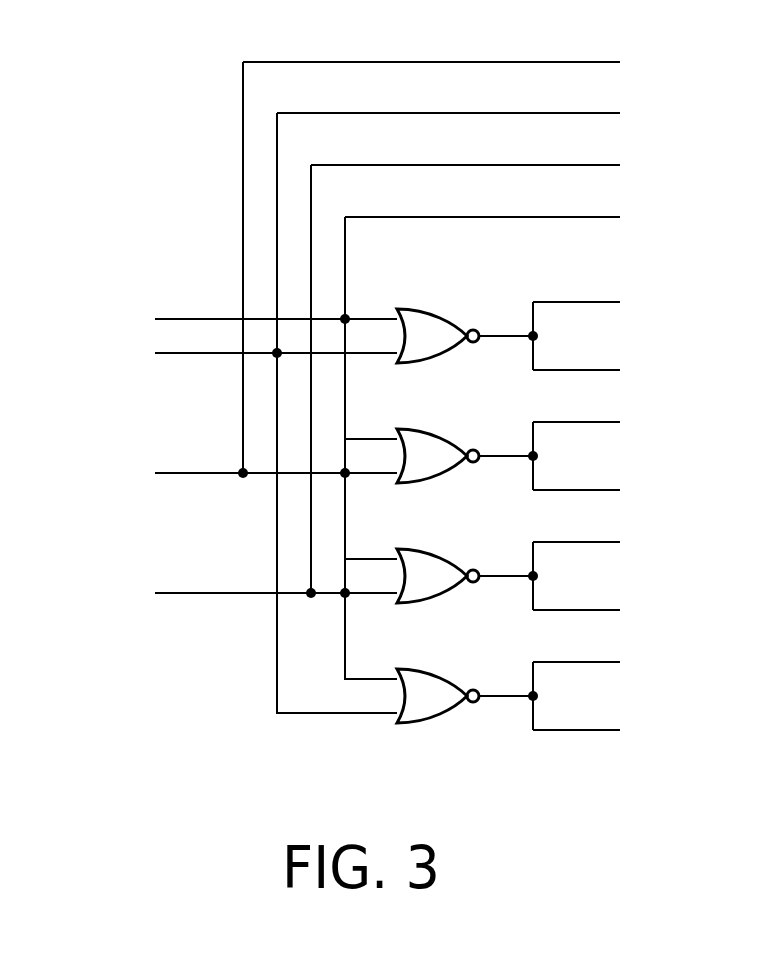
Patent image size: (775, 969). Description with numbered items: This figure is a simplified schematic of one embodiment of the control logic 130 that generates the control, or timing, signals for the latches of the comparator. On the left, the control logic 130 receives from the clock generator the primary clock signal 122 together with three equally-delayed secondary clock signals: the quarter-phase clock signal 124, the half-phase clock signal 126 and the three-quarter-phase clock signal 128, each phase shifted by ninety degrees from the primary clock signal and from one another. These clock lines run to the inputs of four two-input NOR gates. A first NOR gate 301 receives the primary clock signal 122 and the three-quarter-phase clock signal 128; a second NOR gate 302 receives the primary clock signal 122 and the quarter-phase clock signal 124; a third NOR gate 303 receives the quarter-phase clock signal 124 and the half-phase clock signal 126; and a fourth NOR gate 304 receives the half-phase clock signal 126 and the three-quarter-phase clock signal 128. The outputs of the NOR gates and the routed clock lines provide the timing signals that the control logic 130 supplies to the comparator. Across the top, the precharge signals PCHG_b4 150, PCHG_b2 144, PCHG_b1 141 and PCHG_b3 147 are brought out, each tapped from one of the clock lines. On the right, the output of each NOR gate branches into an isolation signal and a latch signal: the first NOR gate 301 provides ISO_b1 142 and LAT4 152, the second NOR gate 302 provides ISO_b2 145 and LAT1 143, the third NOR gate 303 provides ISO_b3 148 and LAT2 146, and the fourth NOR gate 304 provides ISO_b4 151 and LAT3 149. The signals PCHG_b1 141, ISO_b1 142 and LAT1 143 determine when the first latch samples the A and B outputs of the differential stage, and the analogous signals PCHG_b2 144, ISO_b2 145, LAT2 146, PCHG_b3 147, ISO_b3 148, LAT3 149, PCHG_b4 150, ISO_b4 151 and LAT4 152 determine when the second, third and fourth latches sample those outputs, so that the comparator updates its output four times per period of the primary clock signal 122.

The control logic 130 is at (247, 799).
The clock_0 signal 122 is at (214, 319).
The clock_270 signal 128 is at (214, 353).
The clock_90 signal 124 is at (214, 473).
The clock_180 signal 126 is at (214, 593).
The PCHG_b4 timing signal 150 is at (515, 62).
The PCHG_b2 timing signal 144 is at (515, 113).
The PCHG_b1 timing signal 141 is at (515, 165).
The PCHG_b3 timing signal 147 is at (515, 217).
The first NOR gate 301 is at (446, 312).
The second NOR gate 302 is at (446, 432).
The third NOR gate 303 is at (446, 552).
The fourth NOR gate 304 is at (446, 672).
The ISO_b1 timing signal 142 is at (552, 302).
The LAT4 timing signal 152 is at (552, 370).
The ISO_b2 timing signal 145 is at (552, 422).
The LAT1 timing signal 143 is at (552, 490).
The ISO_b3 timing signal 148 is at (552, 542).
The LAT2 timing signal 146 is at (552, 610).
The ISO_b4 timing signal 151 is at (552, 662).
The LAT3 timing signal 149 is at (552, 730).